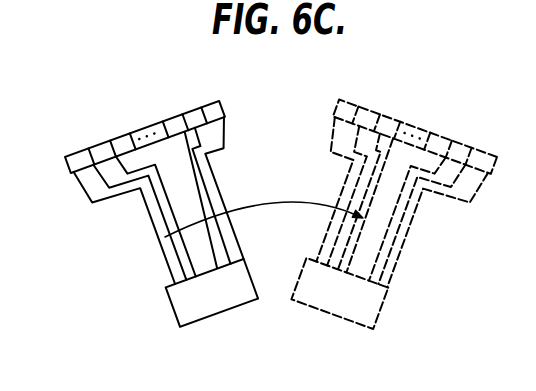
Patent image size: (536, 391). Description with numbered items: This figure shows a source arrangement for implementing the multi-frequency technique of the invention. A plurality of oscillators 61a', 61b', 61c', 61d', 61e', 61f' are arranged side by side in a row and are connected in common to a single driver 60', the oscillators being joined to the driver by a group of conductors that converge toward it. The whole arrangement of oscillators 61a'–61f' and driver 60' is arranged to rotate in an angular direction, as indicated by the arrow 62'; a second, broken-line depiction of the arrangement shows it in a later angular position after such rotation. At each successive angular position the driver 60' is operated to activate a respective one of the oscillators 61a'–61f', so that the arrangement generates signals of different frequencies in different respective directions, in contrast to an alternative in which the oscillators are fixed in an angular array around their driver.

The oscillator 61a' is at (108, 211).
The oscillator 61b' is at (131, 200).
The oscillator 61c' is at (152, 189).
The oscillator 61d' is at (201, 164).
The oscillator 61e' is at (210, 161).
The oscillator 61f' is at (231, 175).
The driver 60' is at (212, 304).
The arrow 62' is at (264, 223).